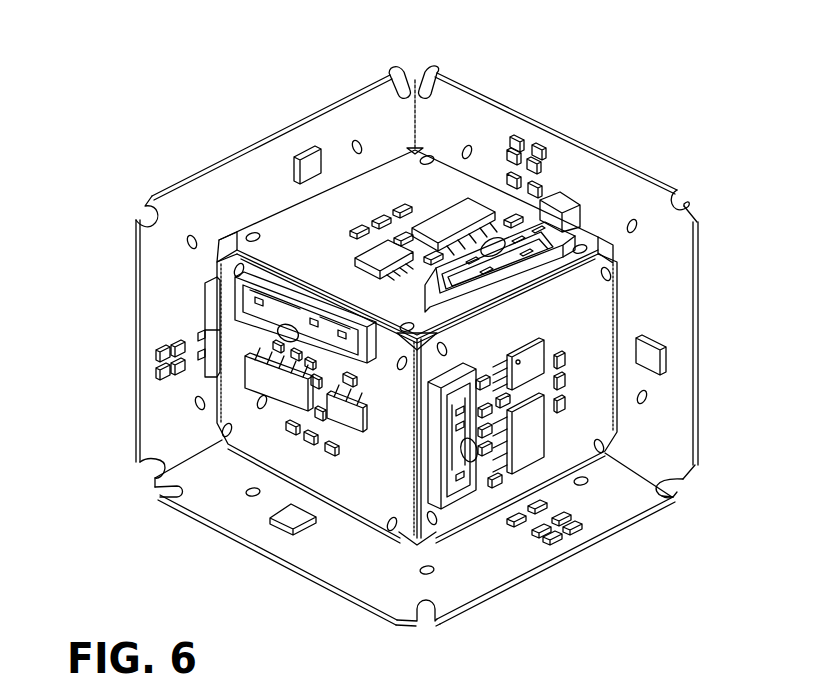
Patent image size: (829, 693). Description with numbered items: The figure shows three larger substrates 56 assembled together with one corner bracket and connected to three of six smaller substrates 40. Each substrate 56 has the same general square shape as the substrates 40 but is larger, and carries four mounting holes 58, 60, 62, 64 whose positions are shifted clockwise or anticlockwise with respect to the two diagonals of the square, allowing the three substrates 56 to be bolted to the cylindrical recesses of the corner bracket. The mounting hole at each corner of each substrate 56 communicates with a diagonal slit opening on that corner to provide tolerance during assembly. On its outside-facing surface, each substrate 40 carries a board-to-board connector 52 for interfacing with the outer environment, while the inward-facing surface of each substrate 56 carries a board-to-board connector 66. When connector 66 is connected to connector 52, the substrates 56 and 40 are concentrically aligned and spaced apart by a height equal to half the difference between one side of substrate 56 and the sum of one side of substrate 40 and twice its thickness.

The substrate 40 is at (447, 177).
The connector 52 is at (255, 287).
The larger substrate 56 is at (320, 117).
The mounting hole 58 is at (140, 217).
The mounting hole 60 is at (395, 78).
The mounting hole 62 is at (667, 500).
The mounting hole 64 is at (435, 75).
The board-to-board connector 66 is at (210, 303).